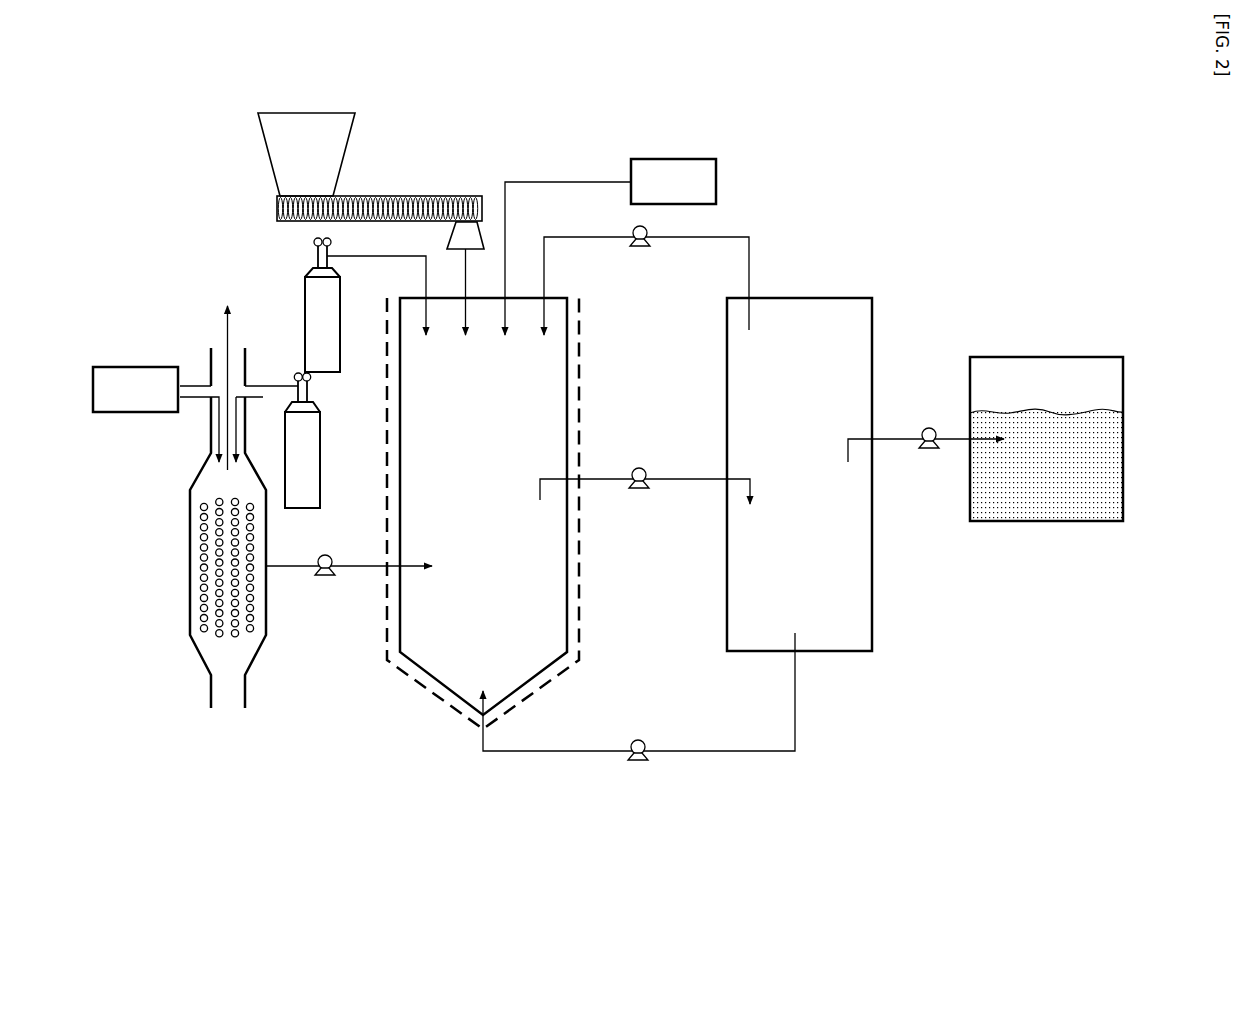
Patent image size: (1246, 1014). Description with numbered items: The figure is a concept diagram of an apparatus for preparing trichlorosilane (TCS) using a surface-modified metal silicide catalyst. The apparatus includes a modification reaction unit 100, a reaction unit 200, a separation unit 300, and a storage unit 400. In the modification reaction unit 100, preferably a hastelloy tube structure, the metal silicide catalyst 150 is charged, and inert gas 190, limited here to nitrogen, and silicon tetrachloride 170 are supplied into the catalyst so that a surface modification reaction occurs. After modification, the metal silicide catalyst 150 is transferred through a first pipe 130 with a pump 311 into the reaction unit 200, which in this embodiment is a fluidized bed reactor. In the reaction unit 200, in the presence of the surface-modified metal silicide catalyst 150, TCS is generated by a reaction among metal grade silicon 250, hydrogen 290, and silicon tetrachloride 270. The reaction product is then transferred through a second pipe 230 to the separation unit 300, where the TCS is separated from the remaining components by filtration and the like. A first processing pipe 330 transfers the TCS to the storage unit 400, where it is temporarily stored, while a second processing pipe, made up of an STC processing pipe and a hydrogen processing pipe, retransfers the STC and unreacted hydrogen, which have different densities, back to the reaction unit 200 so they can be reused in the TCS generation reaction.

The modification reaction unit 100 is at (266, 612).
The first pipe 130 is at (350, 568).
The metal silicide catalyst 150 is at (235, 637).
The silicon tetrachloride (STC) 170 is at (150, 367).
The inert gas 190 is at (321, 458).
The reaction unit 200 is at (570, 578).
The second pipe 230 is at (684, 481).
The metal grade silicon 250 is at (343, 150).
The silicon tetrachloride 270 is at (717, 181).
The hydrogen 290 is at (341, 280).
The separation unit 300 is at (873, 632).
The pump 311 is at (634, 246).
The first processing pipe 330 is at (893, 438).
The storage unit 400 is at (1072, 522).